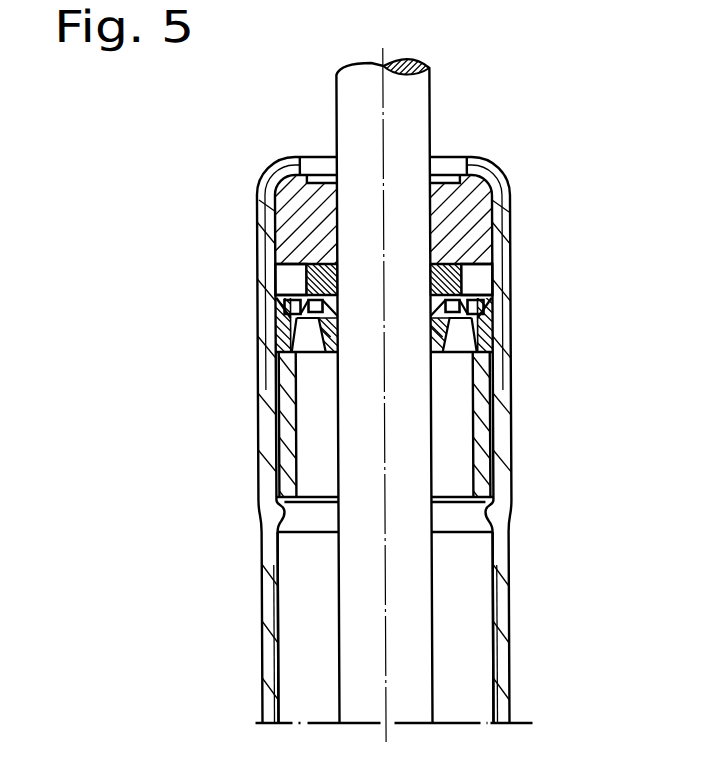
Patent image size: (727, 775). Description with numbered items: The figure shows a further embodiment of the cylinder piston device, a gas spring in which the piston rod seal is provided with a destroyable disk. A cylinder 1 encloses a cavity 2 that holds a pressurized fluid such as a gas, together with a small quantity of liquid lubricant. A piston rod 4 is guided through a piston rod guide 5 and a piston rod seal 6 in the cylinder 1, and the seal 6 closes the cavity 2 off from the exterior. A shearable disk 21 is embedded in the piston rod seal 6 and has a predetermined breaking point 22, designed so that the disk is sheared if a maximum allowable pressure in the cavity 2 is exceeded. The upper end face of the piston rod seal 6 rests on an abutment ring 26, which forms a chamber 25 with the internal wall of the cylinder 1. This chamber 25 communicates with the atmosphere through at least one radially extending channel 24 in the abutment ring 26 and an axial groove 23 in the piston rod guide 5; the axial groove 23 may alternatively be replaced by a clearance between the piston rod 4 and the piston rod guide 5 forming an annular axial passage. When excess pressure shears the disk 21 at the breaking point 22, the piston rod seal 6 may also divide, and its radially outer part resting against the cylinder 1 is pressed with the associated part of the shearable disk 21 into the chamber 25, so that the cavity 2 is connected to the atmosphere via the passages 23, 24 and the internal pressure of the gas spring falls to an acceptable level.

The cylinder 1 is at (502, 666).
The cavity 2 is at (463, 592).
The piston rod 4 is at (404, 433).
The piston rod guide 5 is at (298, 213).
The piston rod seal 6 is at (283, 337).
The shearable disk 21 is at (480, 308).
The predetermined breaking point 22 is at (282, 303).
The axial groove 23 is at (472, 198).
The radially extending channel 24 is at (462, 262).
The chamber 25 is at (468, 285).
The abutment ring 26 is at (300, 278).